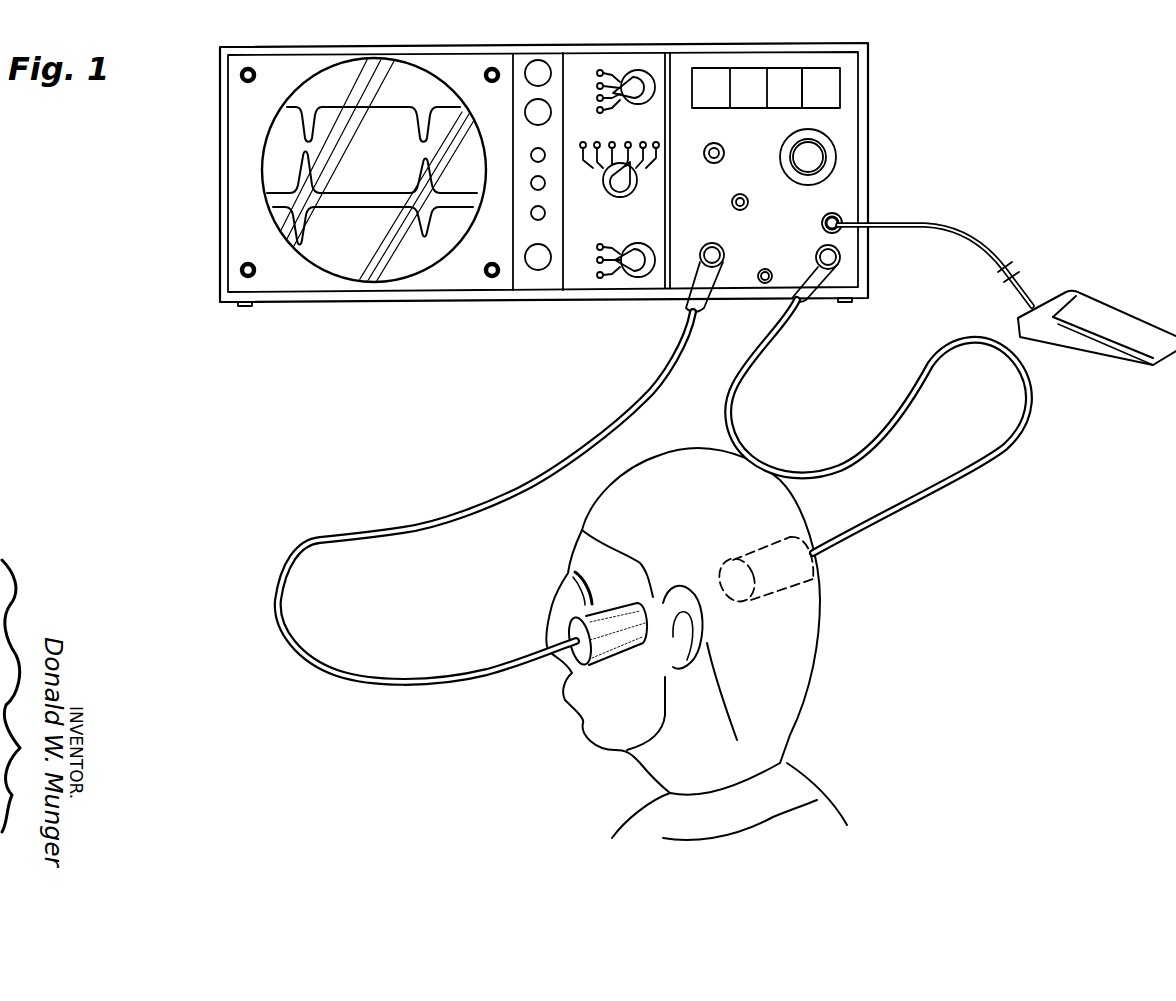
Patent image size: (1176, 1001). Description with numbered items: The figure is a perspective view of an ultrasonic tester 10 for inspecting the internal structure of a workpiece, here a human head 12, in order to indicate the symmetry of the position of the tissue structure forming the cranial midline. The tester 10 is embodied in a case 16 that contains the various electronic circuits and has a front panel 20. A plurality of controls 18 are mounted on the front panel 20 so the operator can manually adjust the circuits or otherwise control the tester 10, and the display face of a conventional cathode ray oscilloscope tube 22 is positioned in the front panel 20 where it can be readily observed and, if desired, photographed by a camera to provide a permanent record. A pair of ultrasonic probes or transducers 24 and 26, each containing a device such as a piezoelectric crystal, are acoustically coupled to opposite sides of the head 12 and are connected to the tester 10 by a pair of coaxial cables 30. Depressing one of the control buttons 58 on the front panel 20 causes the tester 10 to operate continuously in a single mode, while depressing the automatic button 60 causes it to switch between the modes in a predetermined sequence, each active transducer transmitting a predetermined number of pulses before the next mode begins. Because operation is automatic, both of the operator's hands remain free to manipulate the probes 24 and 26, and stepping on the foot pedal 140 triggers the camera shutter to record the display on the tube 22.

The ultrasonic tester 10 is at (875, 156).
The human head 12 is at (704, 448).
The case 16 is at (316, 290).
The controls 18 is at (547, 153).
The front panel 20 is at (578, 73).
The cathode ray oscilloscope tube 22 is at (418, 93).
The ultrasonic probe or transducer 24 is at (795, 585).
The ultrasonic probe or transducer 26 is at (620, 657).
The coaxial cables 30 is at (540, 478).
The control buttons 58 is at (718, 83).
The automatic button 60 is at (827, 70).
The foot pedal 140 is at (1152, 290).